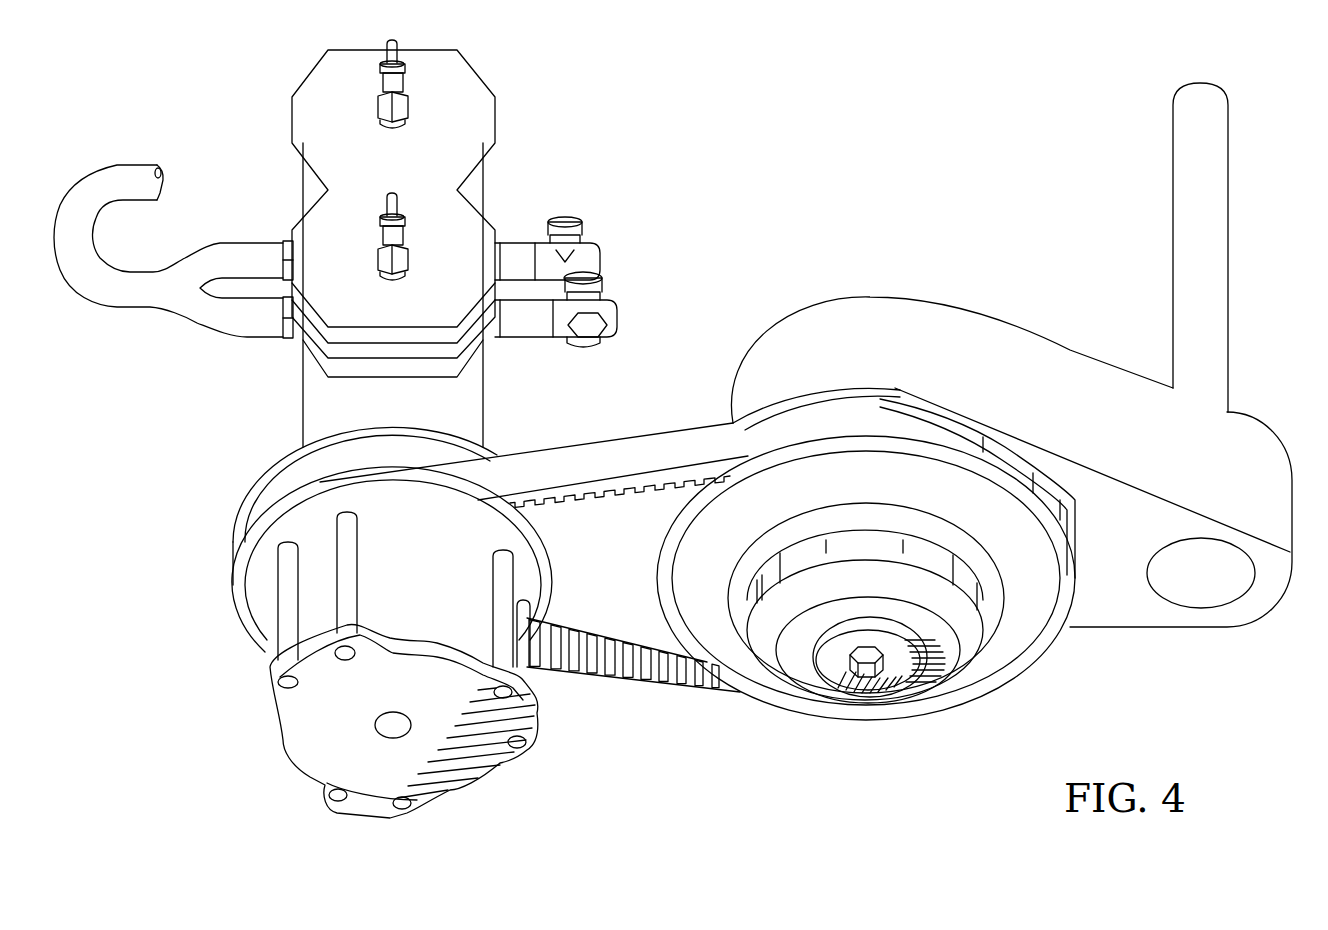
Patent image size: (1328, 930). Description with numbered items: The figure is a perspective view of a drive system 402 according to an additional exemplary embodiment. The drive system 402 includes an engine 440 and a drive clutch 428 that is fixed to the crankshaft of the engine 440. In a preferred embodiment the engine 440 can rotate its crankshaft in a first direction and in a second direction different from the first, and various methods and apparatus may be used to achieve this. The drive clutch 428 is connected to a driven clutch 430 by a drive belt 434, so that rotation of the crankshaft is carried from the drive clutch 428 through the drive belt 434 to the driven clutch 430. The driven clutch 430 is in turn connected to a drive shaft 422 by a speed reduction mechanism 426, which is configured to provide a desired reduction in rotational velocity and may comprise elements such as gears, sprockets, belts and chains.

The drive system 402 is at (664, 594).
The drive shaft 422 is at (1228, 201).
The speed reduction mechanism 426 is at (833, 297).
The drive clutch 428 is at (265, 462).
The driven clutch 430 is at (1052, 668).
The drive belt 434 is at (627, 683).
The engine 440 is at (475, 73).